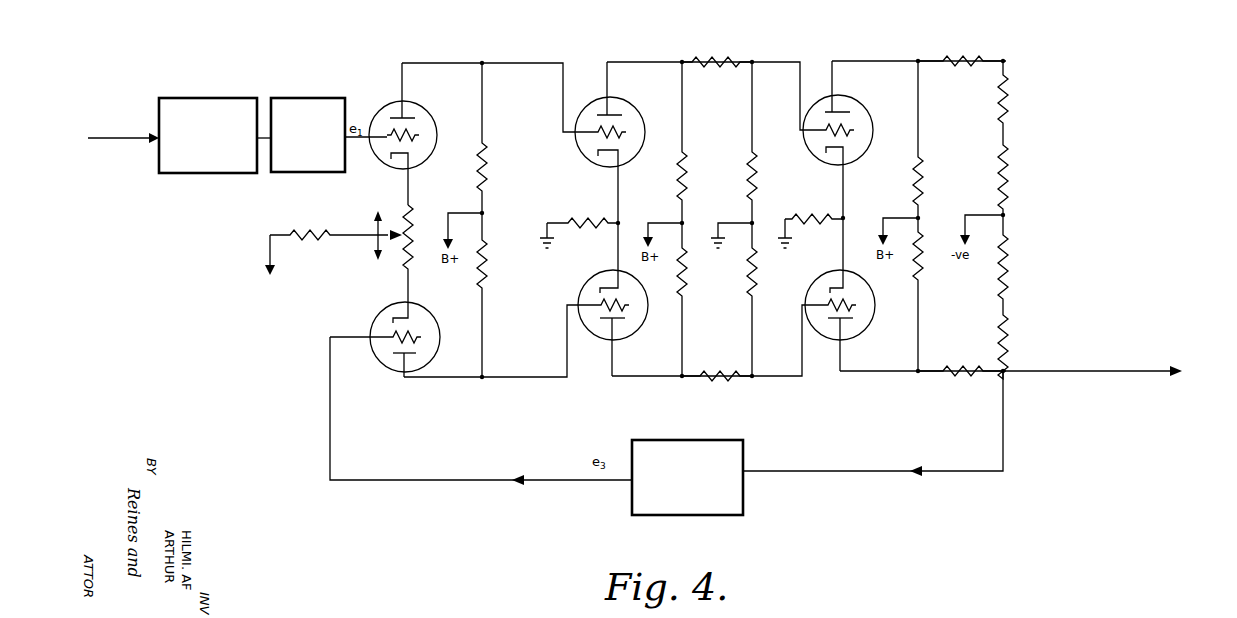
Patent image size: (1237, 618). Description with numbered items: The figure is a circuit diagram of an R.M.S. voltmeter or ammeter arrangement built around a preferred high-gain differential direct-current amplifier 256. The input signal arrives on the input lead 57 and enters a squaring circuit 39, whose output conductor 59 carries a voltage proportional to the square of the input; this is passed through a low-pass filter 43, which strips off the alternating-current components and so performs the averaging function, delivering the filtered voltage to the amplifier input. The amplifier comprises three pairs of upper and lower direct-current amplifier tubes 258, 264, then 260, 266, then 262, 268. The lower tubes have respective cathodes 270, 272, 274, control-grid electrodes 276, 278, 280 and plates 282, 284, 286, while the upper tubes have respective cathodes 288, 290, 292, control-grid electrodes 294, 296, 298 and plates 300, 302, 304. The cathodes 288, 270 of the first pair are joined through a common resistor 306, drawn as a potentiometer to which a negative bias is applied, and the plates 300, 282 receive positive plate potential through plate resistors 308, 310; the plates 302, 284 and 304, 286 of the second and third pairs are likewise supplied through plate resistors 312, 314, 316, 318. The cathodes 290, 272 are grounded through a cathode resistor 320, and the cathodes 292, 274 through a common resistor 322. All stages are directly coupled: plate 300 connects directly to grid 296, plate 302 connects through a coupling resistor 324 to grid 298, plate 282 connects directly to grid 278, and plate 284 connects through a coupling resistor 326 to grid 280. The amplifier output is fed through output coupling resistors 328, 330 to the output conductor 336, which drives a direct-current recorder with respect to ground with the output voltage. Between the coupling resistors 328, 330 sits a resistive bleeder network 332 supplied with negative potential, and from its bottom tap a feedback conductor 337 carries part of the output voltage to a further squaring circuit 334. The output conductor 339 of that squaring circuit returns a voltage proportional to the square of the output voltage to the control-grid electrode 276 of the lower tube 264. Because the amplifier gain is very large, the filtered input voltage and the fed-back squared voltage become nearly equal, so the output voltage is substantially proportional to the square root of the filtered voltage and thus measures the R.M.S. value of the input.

The squaring circuit 39 is at (212, 98).
The low-pass filter 43 is at (308, 96).
The input lead 57 is at (134, 139).
The output conductor 59 is at (264, 140).
The differential direct-current amplifier 256 is at (736, 52).
The upper direct-current amplifier tube 258 is at (421, 107).
The upper direct-current amplifier tube 260 is at (621, 108).
The upper direct-current amplifier tube 262 is at (855, 106).
The lower direct-current amplifier tube 264 is at (438, 342).
The lower direct-current amplifier tube 266 is at (634, 334).
The lower direct-current amplifier tube 268 is at (867, 334).
The cathode 270 is at (395, 315).
The cathode 272 is at (612, 276).
The cathode 274 is at (828, 276).
The control-grid electrode 276 is at (422, 322).
The control-grid electrode 278 is at (624, 306).
The control-grid electrode 280 is at (853, 306).
The plate 282 is at (400, 364).
The plate 284 is at (612, 358).
The plate 286 is at (842, 358).
The cathode 288 is at (392, 158).
The cathode 290 is at (600, 161).
The cathode 292 is at (828, 165).
The control-grid electrode 294 is at (425, 136).
The control-grid electrode 296 is at (627, 138).
The control-grid electrode 298 is at (850, 140).
The plate 300 is at (396, 115).
The plate 302 is at (601, 110).
The plate 304 is at (827, 106).
The common resistor 306 is at (411, 225).
The plate resistor 308 is at (487, 162).
The plate resistor 310 is at (486, 268).
The plate resistor 312 is at (687, 170).
The plate resistor 314 is at (687, 277).
The plate resistor 316 is at (923, 164).
The plate resistor 318 is at (928, 272).
The cathode resistor 320 is at (587, 216).
The common resistor 322 is at (826, 217).
The coupling resistor 324 is at (710, 72).
The coupling resistor 326 is at (716, 380).
The output coupling resistor 328 is at (974, 55).
The output coupling resistor 330 is at (972, 380).
The resistive bleeder network 332 is at (1009, 250).
The squaring circuit 334 is at (744, 442).
The output conductor 336 is at (1100, 369).
The feedback conductor 337 is at (948, 478).
The output conductor 339 is at (478, 483).